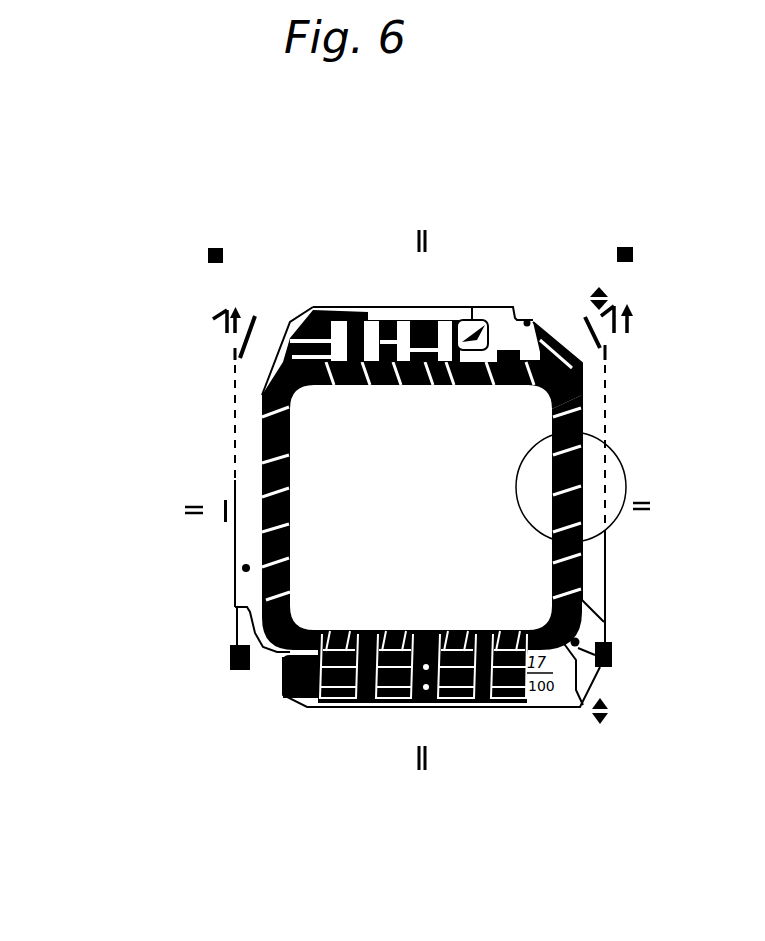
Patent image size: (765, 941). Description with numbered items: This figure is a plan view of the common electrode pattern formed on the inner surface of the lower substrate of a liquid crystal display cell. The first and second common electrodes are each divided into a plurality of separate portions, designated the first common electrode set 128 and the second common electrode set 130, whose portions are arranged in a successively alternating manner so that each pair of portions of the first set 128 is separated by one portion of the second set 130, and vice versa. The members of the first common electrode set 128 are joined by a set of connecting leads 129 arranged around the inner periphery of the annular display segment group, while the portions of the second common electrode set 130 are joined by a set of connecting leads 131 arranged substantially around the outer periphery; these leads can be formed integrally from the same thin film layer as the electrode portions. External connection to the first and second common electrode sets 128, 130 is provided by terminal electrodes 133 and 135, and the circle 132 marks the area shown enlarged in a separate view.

The first common electrode set 128 is at (290, 500).
The set of connecting leads 129 is at (350, 640).
The second common electrode set 130 is at (262, 547).
The set of connecting leads 131 is at (268, 437).
The circle 132 is at (623, 474).
The terminal electrode 133 is at (233, 670).
The terminal electrode 135 is at (612, 663).